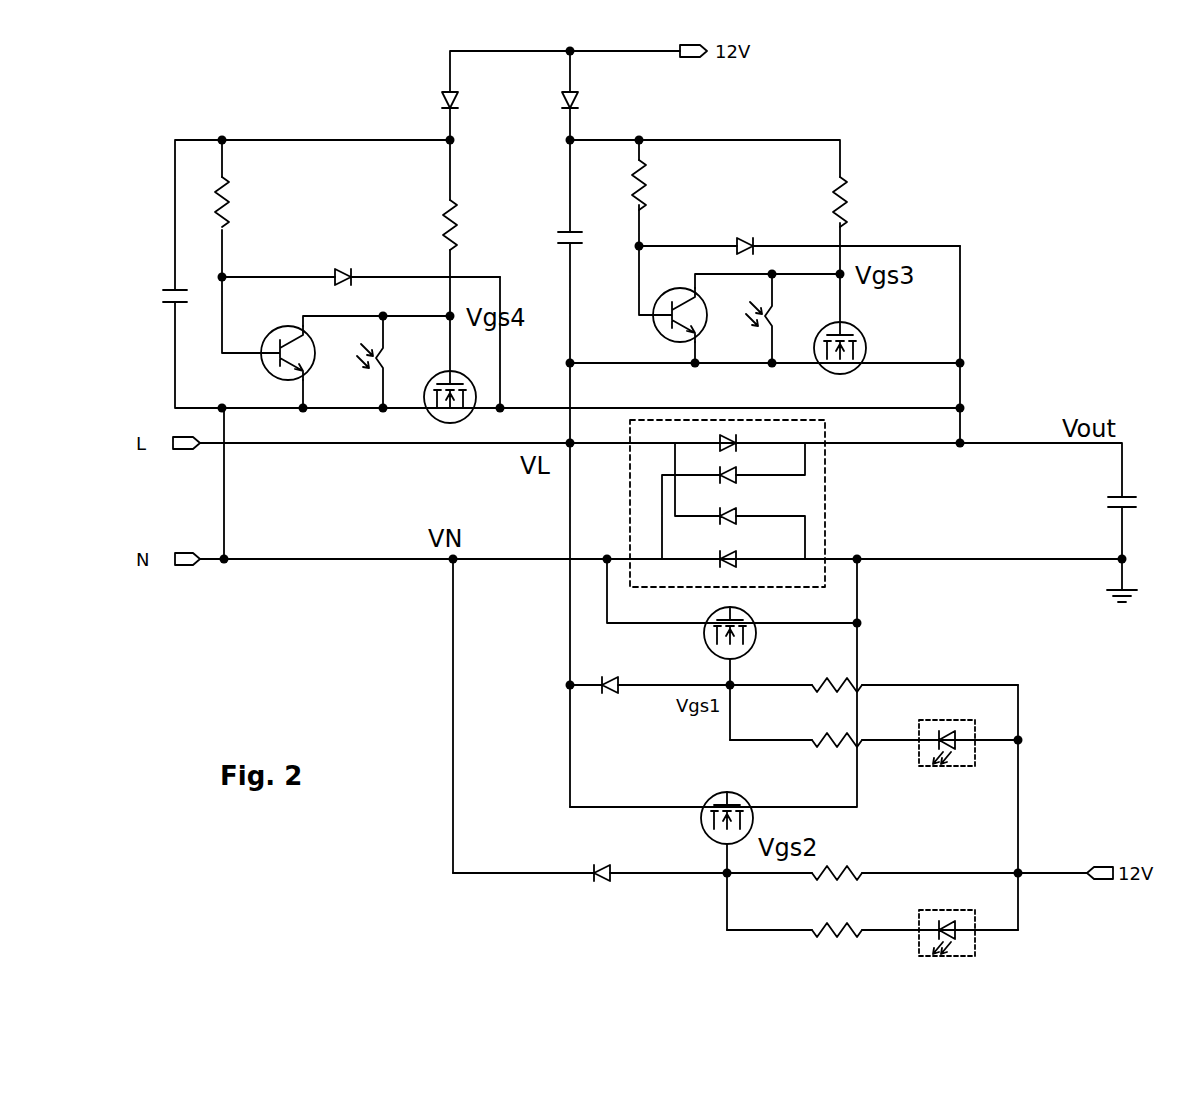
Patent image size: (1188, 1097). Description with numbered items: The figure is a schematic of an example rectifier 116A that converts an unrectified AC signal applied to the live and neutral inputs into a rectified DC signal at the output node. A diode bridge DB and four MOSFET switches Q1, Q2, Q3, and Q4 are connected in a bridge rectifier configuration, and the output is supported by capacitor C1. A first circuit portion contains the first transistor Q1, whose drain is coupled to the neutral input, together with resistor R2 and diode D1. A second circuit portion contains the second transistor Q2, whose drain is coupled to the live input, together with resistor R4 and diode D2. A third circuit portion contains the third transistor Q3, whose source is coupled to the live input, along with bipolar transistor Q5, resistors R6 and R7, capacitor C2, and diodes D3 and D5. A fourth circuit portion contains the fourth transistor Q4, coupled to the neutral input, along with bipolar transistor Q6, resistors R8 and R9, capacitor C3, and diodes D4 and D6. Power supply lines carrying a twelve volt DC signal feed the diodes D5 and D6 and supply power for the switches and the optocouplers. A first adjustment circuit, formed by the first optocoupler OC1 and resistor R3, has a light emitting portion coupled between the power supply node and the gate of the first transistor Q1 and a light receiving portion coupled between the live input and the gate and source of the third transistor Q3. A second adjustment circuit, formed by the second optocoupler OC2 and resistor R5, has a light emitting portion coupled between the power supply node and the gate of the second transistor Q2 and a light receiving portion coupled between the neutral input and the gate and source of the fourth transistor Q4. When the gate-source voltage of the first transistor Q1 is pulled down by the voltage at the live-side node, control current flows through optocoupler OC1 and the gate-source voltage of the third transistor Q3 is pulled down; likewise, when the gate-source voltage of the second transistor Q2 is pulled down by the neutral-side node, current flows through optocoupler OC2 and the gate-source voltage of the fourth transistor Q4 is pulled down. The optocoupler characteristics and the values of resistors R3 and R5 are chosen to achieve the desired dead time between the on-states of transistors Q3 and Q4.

The rectifier 116A is at (1010, 180).
The diode D1 is at (650, 672).
The diode D2 is at (632, 860).
The diode D3 is at (799, 232).
The diode D4 is at (361, 265).
The diode D5 is at (591, 101).
The diode D6 is at (428, 101).
The resistor R2 is at (874, 672).
The resistor R3 is at (837, 727).
The resistor R4 is at (949, 863).
The resistor R5 is at (837, 919).
The resistor R6 is at (860, 202).
The resistor R7 is at (658, 185).
The resistor R8 is at (469, 225).
The resistor R9 is at (242, 202).
The capacitor C1 is at (1141, 500).
The capacitor C2 is at (584, 224).
The capacitor C3 is at (156, 297).
The first transistor Q1 is at (730, 625).
The second transistor Q2 is at (727, 808).
The third transistor Q3 is at (857, 344).
The fourth transistor Q4 is at (456, 373).
The transistor Q5 is at (666, 322).
The transistor Q6 is at (268, 358).
The first optocoupler OC1 is at (874, 520).
The second optocoupler OC2 is at (687, 636).
The diode bridge DB is at (748, 503).